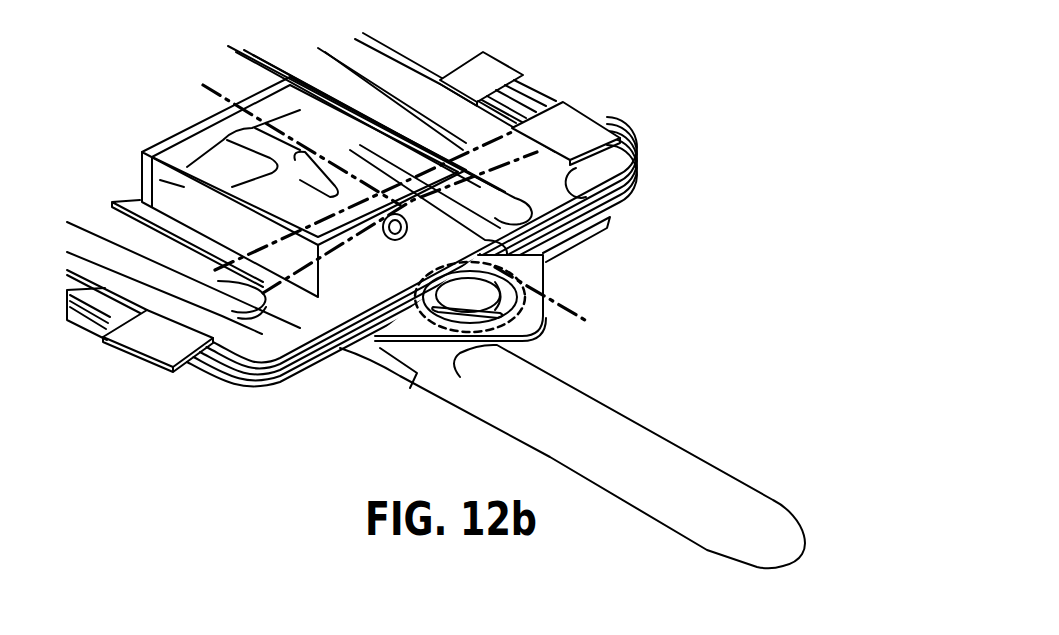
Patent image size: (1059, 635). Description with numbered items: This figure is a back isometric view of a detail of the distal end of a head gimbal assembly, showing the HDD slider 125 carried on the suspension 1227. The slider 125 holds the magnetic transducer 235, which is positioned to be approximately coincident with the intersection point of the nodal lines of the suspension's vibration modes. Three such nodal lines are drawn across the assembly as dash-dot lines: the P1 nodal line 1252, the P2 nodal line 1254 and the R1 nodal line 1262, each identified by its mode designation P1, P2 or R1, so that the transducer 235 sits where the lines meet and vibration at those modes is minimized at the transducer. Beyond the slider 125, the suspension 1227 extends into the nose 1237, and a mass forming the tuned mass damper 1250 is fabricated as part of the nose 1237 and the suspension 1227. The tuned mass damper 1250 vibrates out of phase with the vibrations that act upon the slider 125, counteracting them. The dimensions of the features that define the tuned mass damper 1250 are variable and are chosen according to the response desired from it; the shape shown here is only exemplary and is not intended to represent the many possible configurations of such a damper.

The HDD slider 125 is at (140, 158).
The P1 nodal line 1252 is at (507, 130).
The P2 nodal line 1254 is at (540, 140).
The suspension 1227 is at (668, 165).
The magnetic transducer 235 is at (585, 248).
The nose 1237 is at (548, 302).
The tuned mass damper 1250 is at (452, 330).
The R1 nodal line 1262 is at (565, 320).
The P1 nodal line designation P1 is at (378, 229).
The P2 nodal line designation P2 is at (341, 209).
The R1 nodal line designation R1 is at (557, 306).